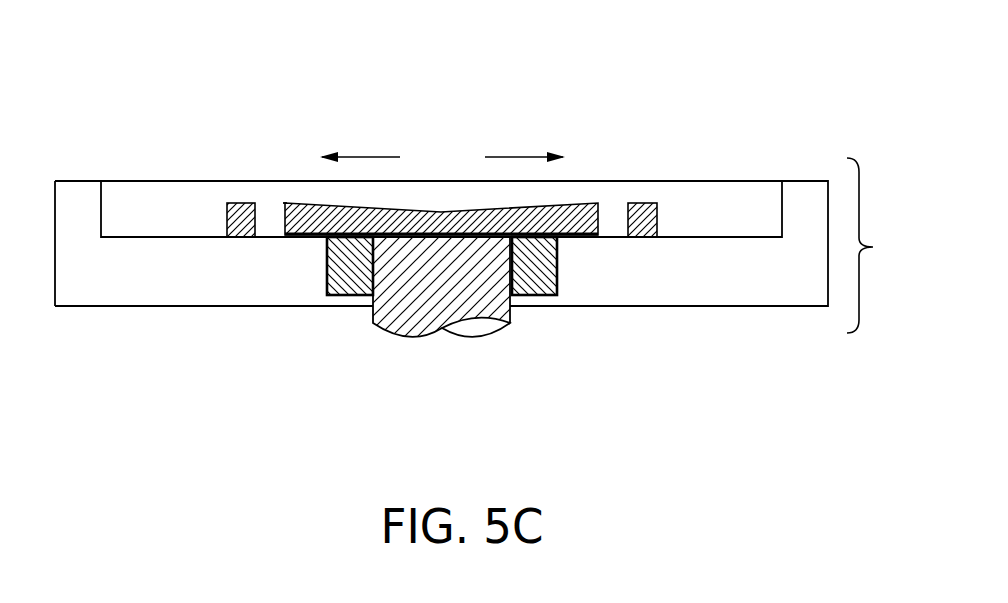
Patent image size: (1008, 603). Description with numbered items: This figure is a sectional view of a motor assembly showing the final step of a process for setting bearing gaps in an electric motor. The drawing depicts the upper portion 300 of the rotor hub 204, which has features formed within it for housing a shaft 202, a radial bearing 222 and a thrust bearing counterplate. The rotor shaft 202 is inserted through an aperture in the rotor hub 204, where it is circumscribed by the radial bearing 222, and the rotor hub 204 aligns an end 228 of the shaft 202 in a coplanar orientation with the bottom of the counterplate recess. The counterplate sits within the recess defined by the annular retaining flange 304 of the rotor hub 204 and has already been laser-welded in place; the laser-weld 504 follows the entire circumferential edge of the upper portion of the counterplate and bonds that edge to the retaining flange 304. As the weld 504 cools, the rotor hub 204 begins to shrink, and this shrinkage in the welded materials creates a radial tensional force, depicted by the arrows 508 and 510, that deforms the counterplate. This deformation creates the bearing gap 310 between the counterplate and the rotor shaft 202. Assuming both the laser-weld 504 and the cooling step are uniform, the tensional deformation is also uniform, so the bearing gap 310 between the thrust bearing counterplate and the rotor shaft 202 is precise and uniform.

The shaft 202 is at (478, 330).
The rotor hub 204 is at (733, 282).
The radial bearing 222 is at (542, 285).
The end of the shaft 228 is at (437, 240).
The upper portion of the rotor hub 300 is at (894, 245).
The annular retaining flange 304 is at (618, 208).
The bearing gap 310 is at (445, 228).
The laser-weld 504 is at (285, 203).
The arrow 508 is at (370, 157).
The arrow 510 is at (517, 157).